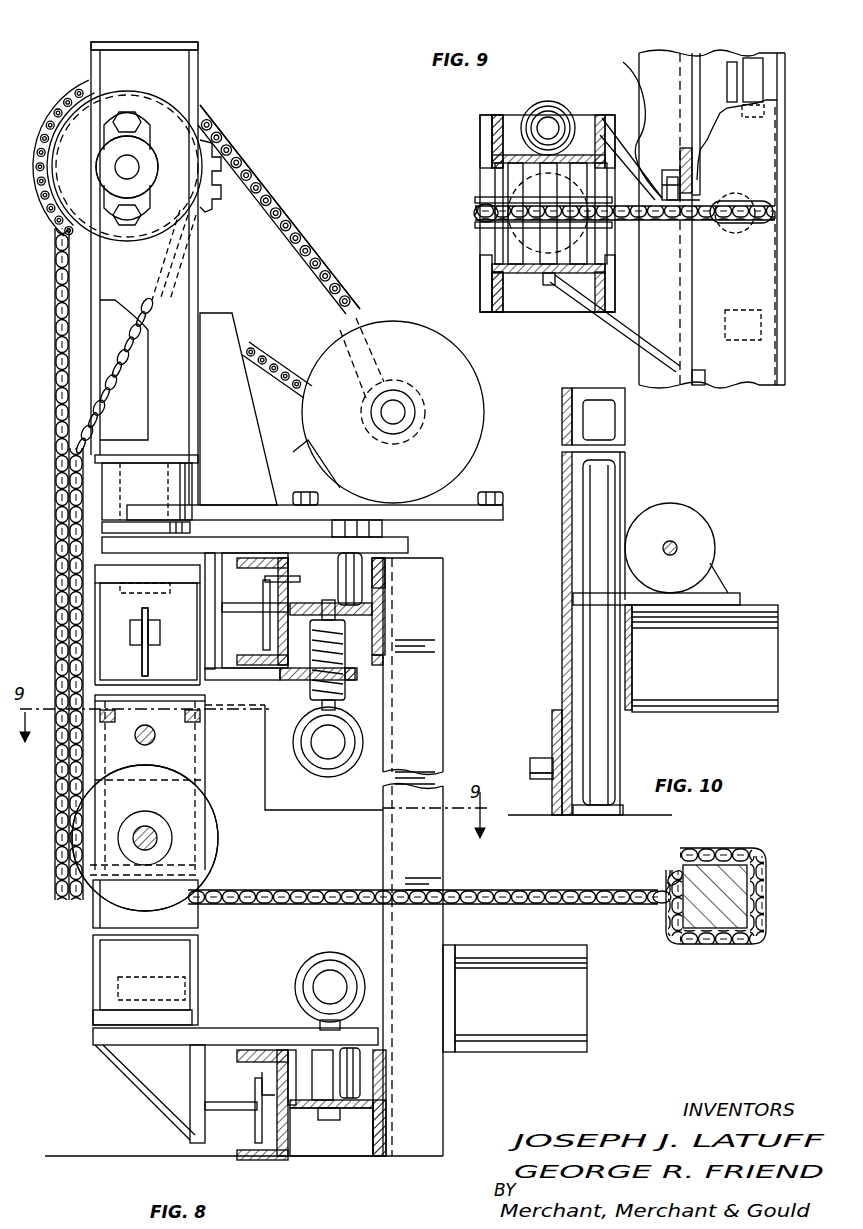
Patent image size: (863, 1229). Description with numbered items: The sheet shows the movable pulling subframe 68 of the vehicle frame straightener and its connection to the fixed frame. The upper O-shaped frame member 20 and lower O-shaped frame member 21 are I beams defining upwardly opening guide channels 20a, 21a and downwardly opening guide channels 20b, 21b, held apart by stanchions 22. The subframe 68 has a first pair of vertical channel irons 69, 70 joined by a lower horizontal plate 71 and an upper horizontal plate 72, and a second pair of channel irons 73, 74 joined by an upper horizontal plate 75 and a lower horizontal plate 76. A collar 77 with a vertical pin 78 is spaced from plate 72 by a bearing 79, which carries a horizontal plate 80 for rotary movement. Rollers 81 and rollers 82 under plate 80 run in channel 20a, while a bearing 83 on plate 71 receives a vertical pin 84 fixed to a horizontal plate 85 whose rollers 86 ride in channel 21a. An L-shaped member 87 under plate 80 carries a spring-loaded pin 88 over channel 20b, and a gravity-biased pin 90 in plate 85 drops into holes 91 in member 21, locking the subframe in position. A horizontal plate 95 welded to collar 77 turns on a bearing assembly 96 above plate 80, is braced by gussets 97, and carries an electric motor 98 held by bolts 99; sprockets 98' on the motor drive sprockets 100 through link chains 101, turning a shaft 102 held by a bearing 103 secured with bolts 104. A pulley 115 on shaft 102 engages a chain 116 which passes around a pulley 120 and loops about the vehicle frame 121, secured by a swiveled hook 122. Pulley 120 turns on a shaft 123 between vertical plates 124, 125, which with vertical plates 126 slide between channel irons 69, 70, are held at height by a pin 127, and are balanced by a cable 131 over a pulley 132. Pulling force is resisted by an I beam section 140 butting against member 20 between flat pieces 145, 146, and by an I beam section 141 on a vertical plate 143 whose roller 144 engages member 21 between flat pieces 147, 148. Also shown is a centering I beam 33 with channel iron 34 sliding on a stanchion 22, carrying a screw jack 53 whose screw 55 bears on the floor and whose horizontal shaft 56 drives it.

In FIG. 8, the upper O-shaped frame member 20 is at (386, 640).
In FIG. 8, the upwardly opening guide channel 20a is at (378, 592).
In FIG. 8, the downwardly opening guide channel 20b is at (352, 682).
In FIG. 8, the lower O-shaped frame member 21 is at (377, 1158).
In FIG. 9, the lower O-shaped frame member 21 is at (640, 52).
In FIG. 10, the lower O-shaped frame member 21 is at (552, 714).
In FIG. 8, the upwardly opening guide channel 21a is at (293, 1075).
In FIG. 9, the upwardly opening guide channel 21a is at (702, 62).
In FIG. 10, the upwardly opening guide channel 21a is at (540, 748).
In FIG. 8, the downwardly opening guide channel 21b is at (352, 1165).
In FIG. 10, the downwardly opening guide channel 21b is at (540, 775).
In FIG. 8, the stanchion 22 is at (446, 772).
In FIG. 10, the stanchion 22 is at (562, 587).
In FIG. 8, the centering I beam 33 is at (528, 1038).
In FIG. 10, the centering I beam 33 is at (710, 682).
In FIG. 8, the channel iron 34 is at (450, 1052).
In FIG. 10, the channel iron 34 is at (630, 710).
In FIG. 10, the worm gear screw jack 53 is at (700, 524).
In FIG. 10, the screw 55 is at (606, 780).
In FIG. 10, the horizontal shaft 56 is at (670, 540).
In FIG. 8, the subframe 68 is at (247, 156).
In FIG. 9, the subframe 68 is at (482, 114).
In FIG. 8, the channel iron 69 is at (92, 905).
In FIG. 9, the channel iron 69 is at (497, 118).
In FIG. 8, the channel iron 70 is at (95, 975).
In FIG. 9, the channel iron 70 is at (492, 312).
In FIG. 8, the lower horizontal plate 71 is at (95, 1015).
In FIG. 9, the lower horizontal plate 71 is at (500, 250).
In FIG. 8, the upper horizontal plate 72 is at (95, 575).
In FIG. 8, the channel iron 73 is at (100, 345).
In FIG. 8, the channel iron 74 is at (192, 80).
In FIG. 8, the upper horizontal plate 75 is at (91, 46).
In FIG. 8, the lower horizontal plate 76 is at (97, 460).
In FIG. 8, the collar 77 is at (106, 490).
In FIG. 8, the vertical pin 78 is at (150, 388).
In FIG. 8, the bearing 79 is at (102, 527).
In FIG. 8, the horizontal plate 80 is at (408, 544).
In FIG. 8, the rollers 81 is at (298, 580).
In FIG. 8, the rollers 82 is at (352, 552).
In FIG. 8, the bearing 83 is at (196, 990).
In FIG. 9, the bearing 83 is at (570, 290).
In FIG. 8, the vertical pin 84 is at (124, 1062).
In FIG. 8, the horizontal plate 85 is at (95, 1036).
In FIG. 9, the horizontal plate 85 is at (776, 272).
In FIG. 8, the rollers 86 is at (360, 1078).
In FIG. 9, the rollers 86 is at (763, 76).
In FIG. 8, the L-shaped member 87 is at (255, 668).
In FIG. 8, the pin 88 is at (312, 770).
In FIG. 8, the pin 90 is at (313, 972).
In FIG. 9, the pin 90 is at (757, 228).
In FIG. 8, the holes 91 is at (315, 1110).
In FIG. 8, the horizontal plate 95 is at (500, 521).
In FIG. 8, the bearing assembly 96 is at (383, 522).
In FIG. 8, the gussets 97 is at (260, 446).
In FIG. 8, the electric motor 98 is at (410, 412).
In FIG. 8, the sprockets 98' is at (380, 381).
In FIG. 8, the bolts 99 is at (312, 492).
In FIG. 8, the sprockets 100 is at (208, 212).
In FIG. 8, the link chains 101 is at (308, 248).
In FIG. 8, the shaft 102 is at (131, 164).
In FIG. 8, the bearing 103 is at (155, 162).
In FIG. 8, the bolts 104 is at (128, 117).
In FIG. 8, the pulley 115 is at (62, 182).
In FIG. 8, the chain 116 is at (53, 286).
In FIG. 9, the chain 116 is at (476, 213).
In FIG. 8, the pulley 120 is at (100, 880).
In FIG. 9, the pulley 120 is at (492, 205).
In FIG. 8, the vehicle frame 121 is at (746, 886).
In FIG. 8, the swiveled hook 122 is at (660, 890).
In FIG. 8, the shaft 123 is at (145, 825).
In FIG. 8, the vertical plate 124 is at (92, 780).
In FIG. 9, the vertical plate 124 is at (495, 168).
In FIG. 9, the vertical plate 125 is at (496, 268).
In FIG. 8, the vertical plates 126 is at (205, 742).
In FIG. 9, the vertical plates 126 is at (481, 146).
In FIG. 8, the pin 127 is at (140, 742).
In FIG. 9, the pin 127 is at (556, 114).
In FIG. 8, the cable 131 is at (150, 655).
In FIG. 9, the cable 131 is at (540, 286).
In FIG. 8, the pulley 132 is at (150, 617).
In FIG. 8, the I beam section 140 is at (245, 636).
In FIG. 8, the I beam section 141 is at (234, 1112).
In FIG. 9, the I beam section 141 is at (638, 92).
In FIG. 8, the vertical plate 143 is at (190, 1140).
In FIG. 8, the roller 144 is at (270, 1082).
In FIG. 9, the roller 144 is at (680, 200).
In FIG. 8, the flat piece of metal 145 is at (247, 556).
In FIG. 8, the flat piece of metal 146 is at (250, 668).
In FIG. 8, the flat piece of metal 147 is at (242, 1050).
In FIG. 9, the flat piece of metal 147 is at (664, 58).
In FIG. 8, the flat piece of metal 148 is at (255, 1160).
In FIG. 9, the flat piece of metal 148 is at (664, 150).